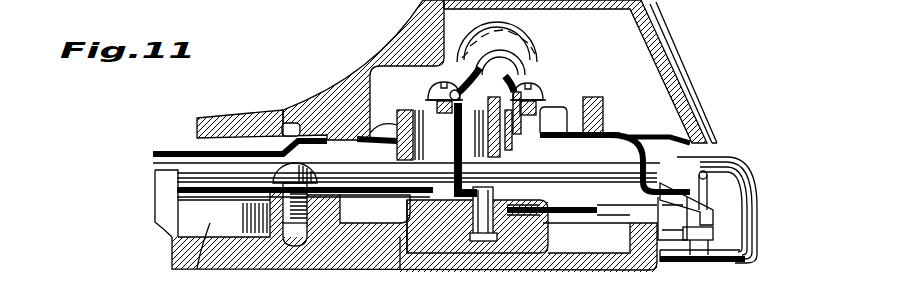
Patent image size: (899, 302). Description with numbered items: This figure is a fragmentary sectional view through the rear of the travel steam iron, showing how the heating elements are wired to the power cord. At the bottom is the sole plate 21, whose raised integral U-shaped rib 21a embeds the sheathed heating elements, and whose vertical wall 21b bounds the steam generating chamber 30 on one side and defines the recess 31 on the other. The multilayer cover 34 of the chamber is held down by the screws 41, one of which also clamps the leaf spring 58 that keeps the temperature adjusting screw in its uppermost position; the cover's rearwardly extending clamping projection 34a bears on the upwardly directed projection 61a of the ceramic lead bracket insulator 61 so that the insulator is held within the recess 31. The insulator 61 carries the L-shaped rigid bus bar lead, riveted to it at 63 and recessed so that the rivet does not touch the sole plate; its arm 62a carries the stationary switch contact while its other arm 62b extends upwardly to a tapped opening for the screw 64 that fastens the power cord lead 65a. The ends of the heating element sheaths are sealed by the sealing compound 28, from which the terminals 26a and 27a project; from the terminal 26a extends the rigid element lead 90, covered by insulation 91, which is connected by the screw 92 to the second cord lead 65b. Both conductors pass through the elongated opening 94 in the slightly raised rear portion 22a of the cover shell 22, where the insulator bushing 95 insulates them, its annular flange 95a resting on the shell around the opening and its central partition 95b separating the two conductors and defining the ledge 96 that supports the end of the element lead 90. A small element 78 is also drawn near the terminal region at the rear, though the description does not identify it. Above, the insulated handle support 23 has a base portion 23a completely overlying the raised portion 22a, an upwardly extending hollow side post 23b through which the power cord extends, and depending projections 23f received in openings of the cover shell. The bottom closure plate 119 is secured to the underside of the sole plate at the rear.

The sole plate 21 is at (183, 253).
The raised integral U-shaped rib 21a is at (172, 172).
The vertical wall portion or cross member 21b is at (340, 212).
The cover shell 22 is at (747, 174).
The raised rear portion of cover shell 22a is at (305, 123).
The handle support member 23 is at (680, 42).
The base portion 23a is at (226, 117).
The side post portion 23b is at (690, 68).
The depending projections 23f is at (335, 153).
The terminal 26a is at (713, 240).
The terminal 27a is at (715, 201).
The sealing compound 28 is at (680, 250).
The steam generating chamber 30 is at (197, 270).
The recess 31 is at (378, 272).
The cover 34 is at (177, 189).
The clamping projection 34a is at (397, 200).
The fastening means 41 is at (276, 165).
The leaf spring member 58 is at (280, 172).
The ceramic lead bracket insulator 61 is at (538, 240).
The upwardly directed projection 61a is at (424, 200).
The arm of rigid lead 62a is at (567, 214).
The arm of rigid lead 62b is at (455, 152).
The rivet 63 is at (480, 242).
The screw 64 is at (438, 62).
The lead of power cord 65a is at (458, 52).
The lead of power cord 65b is at (512, 80).
The pivot pin 78 is at (708, 171).
The rigid element lead 90 is at (567, 127).
The insulation 91 is at (617, 133).
The screw 92 is at (522, 93).
The elongated opening 94 is at (390, 143).
The insulator bushing 95 is at (408, 115).
The annular flange 95a is at (390, 130).
The central partition 95b is at (497, 118).
The ledge 96 is at (550, 123).
The bottom closure plate 119 is at (747, 263).